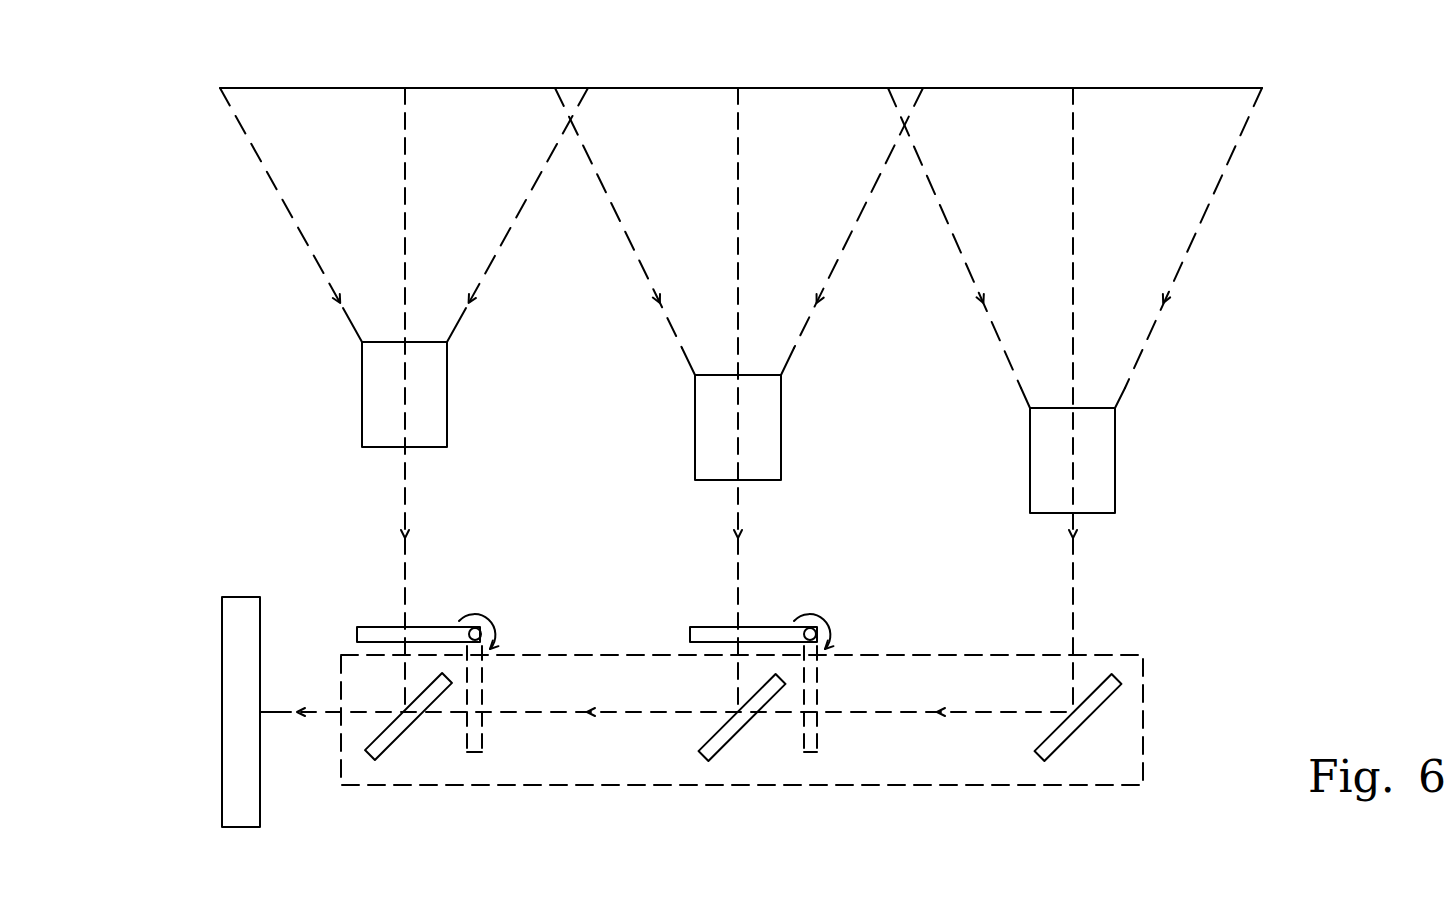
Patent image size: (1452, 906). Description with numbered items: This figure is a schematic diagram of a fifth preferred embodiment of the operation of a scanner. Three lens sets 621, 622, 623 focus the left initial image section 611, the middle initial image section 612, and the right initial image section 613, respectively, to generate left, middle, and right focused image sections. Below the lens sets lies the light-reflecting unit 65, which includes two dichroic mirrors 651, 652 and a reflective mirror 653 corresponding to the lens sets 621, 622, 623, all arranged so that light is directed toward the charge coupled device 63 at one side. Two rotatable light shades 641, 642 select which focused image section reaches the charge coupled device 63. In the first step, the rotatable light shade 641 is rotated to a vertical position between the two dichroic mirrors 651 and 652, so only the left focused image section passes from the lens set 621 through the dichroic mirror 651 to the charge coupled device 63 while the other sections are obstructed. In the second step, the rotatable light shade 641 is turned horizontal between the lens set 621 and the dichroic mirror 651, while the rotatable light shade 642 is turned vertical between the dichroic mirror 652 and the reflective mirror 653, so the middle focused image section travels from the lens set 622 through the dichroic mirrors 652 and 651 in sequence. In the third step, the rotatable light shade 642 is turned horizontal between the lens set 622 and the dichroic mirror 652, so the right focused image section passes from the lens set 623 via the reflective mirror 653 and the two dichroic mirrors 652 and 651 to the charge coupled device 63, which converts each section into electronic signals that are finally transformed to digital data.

The left initial image section 611 is at (405, 88).
The middle initial image section 612 is at (738, 88).
The right initial image section 613 is at (1073, 88).
The lens set 621 is at (423, 383).
The lens set 622 is at (758, 417).
The lens set 623 is at (1093, 450).
The rotatable light shade 641 is at (447, 630).
The rotatable light shade 642 is at (783, 630).
The charge coupled device 63 is at (237, 685).
The light-reflecting unit 65 is at (1130, 747).
The dichroic mirror 651 is at (382, 743).
The dichroic mirror 652 is at (717, 743).
The reflective mirror 653 is at (1053, 745).